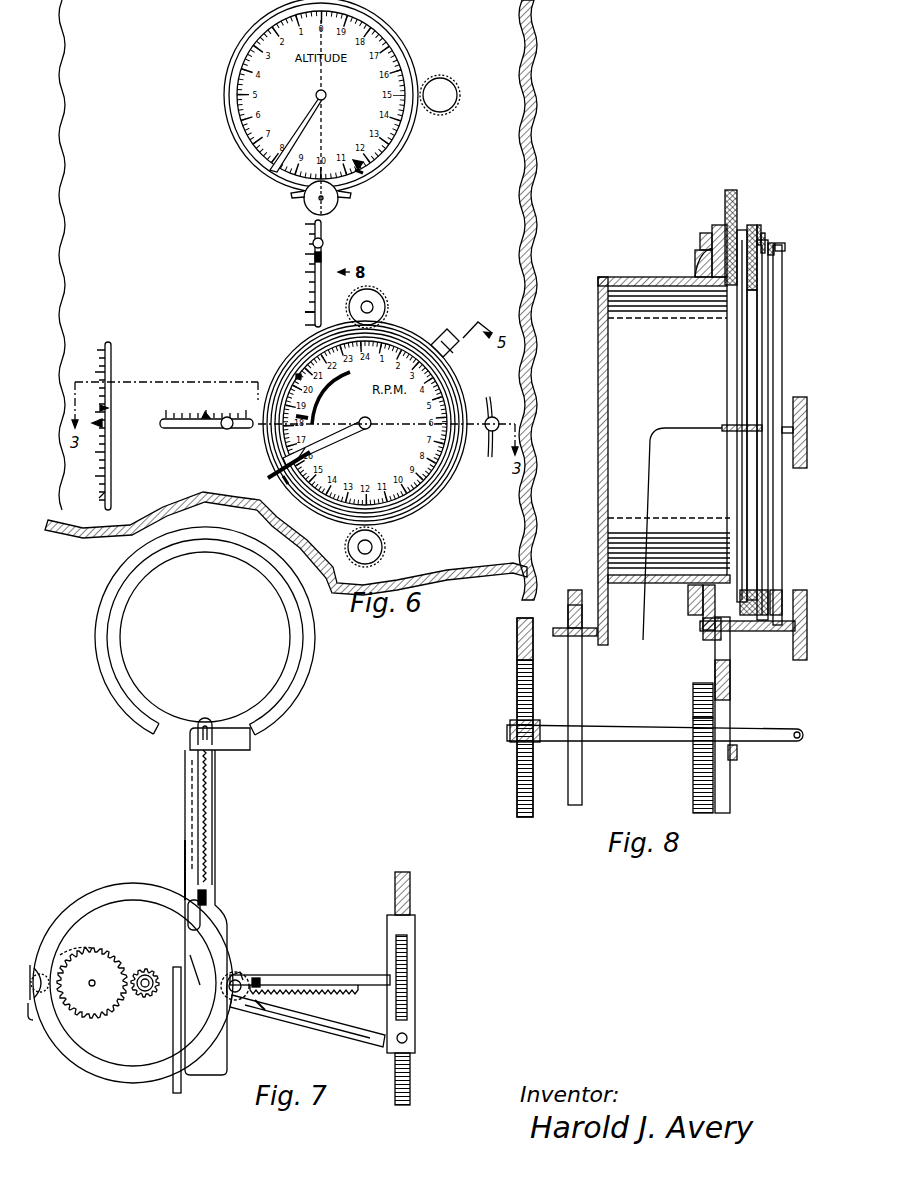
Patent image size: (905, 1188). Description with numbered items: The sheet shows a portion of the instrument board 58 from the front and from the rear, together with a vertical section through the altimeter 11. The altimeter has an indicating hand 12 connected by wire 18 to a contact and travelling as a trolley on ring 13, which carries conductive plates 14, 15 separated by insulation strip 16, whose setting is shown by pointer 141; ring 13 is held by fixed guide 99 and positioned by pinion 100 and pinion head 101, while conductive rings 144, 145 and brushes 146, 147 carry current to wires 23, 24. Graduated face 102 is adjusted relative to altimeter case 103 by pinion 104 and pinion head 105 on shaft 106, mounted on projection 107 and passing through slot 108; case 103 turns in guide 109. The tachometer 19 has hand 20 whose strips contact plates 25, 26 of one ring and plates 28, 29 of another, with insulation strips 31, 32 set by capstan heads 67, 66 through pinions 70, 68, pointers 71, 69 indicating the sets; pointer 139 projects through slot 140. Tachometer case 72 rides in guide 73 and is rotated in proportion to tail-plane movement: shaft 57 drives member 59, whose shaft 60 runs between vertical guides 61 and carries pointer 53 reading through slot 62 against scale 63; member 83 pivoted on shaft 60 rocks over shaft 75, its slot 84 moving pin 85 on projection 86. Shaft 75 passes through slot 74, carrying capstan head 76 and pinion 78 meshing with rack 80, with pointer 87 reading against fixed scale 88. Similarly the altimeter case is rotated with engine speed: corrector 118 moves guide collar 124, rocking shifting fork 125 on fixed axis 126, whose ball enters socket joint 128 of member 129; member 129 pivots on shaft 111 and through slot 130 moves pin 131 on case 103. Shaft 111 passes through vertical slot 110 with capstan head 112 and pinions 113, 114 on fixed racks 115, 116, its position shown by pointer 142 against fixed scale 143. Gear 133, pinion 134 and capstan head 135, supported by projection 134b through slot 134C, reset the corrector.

In FIG. 6, the altimeter 11 is at (243, 48).
In FIG. 8, the altimeter 11 is at (782, 513).
In FIG. 6, the indicating hand 12 is at (312, 120).
In FIG. 8, the indicating hand 12 is at (770, 331).
In FIG. 8, the ring 13 is at (698, 265).
In FIG. 6, the conductive arc-shaped plate 14 is at (395, 137).
In FIG. 6, the conductive arc-shaped plate 15 is at (258, 152).
In FIG. 8, the conductive arc-shaped plate 15 is at (778, 590).
In FIG. 6, the insulation strip 16 is at (362, 175).
In FIG. 8, the wire 18 is at (643, 615).
In FIG. 6, the tachometer 19 is at (428, 510).
In FIG. 6, the indicating hand 20 is at (332, 445).
In FIG. 8, the wire 23 is at (764, 233).
In FIG. 8, the wire 24 is at (759, 225).
In FIG. 6, the plate 25 is at (302, 345).
In FIG. 6, the plate 26 is at (443, 484).
In FIG. 6, the plate 28 is at (405, 345).
In FIG. 6, the plate 29 is at (452, 464).
In FIG. 6, the insulation strip 31 is at (288, 368).
In FIG. 6, the insulation strip 32 is at (290, 472).
In FIG. 6, the pointer 53 is at (110, 410).
In FIG. 7, the shaft 57 is at (395, 885).
In FIG. 6, the instrument board 58 is at (530, 162).
In FIG. 8, the instrument board 58 is at (738, 195).
In FIG. 7, the member 59 is at (392, 1056).
In FIG. 7, the shaft 60 is at (408, 1038).
In FIG. 7, the vertical guides 61 is at (388, 956).
In FIG. 6, the slot 62 is at (111, 488).
In FIG. 6, the scale 63 is at (100, 490).
In FIG. 6, the capstan head 66 is at (375, 308).
In FIG. 6, the capstan head 67 is at (373, 547).
In FIG. 6, the pinion 68 is at (380, 290).
In FIG. 6, the pointer 69 is at (290, 490).
In FIG. 6, the pinion 70 is at (382, 557).
In FIG. 6, the pointer 71 is at (300, 385).
In FIG. 7, the tachometer case 72 is at (122, 1053).
In FIG. 7, the guide 73 is at (118, 895).
In FIG. 6, the slot 74 is at (185, 429).
In FIG. 7, the shaft 75 is at (255, 1000).
In FIG. 6, the capstan head 76 is at (226, 430).
In FIG. 7, the pinion 78 is at (262, 985).
In FIG. 7, the rack 80 is at (355, 975).
In FIG. 7, the member 83 is at (338, 1028).
In FIG. 7, the longitudinal slot 84 is at (310, 1015).
In FIG. 7, the pin 85 is at (240, 985).
In FIG. 7, the projection 86 is at (240, 990).
In FIG. 6, the pointer 87 is at (210, 429).
In FIG. 6, the fixed scale 88 is at (160, 421).
In FIG. 8, the fixed guide 99 is at (770, 600).
In FIG. 6, the pinion 100 is at (458, 93).
In FIG. 6, the pinion head 101 is at (438, 75).
In FIG. 8, the pinion head 101 is at (801, 415).
In FIG. 8, the graduated face 102 is at (736, 378).
In FIG. 7, the altimeter case 103 is at (272, 646).
In FIG. 8, the altimeter case 103 is at (607, 435).
In FIG. 8, the pinion 104 is at (730, 652).
In FIG. 6, the pinion head 105 is at (338, 203).
In FIG. 8, the pinion head 105 is at (806, 645).
In FIG. 6, the shaft 106 is at (305, 200).
In FIG. 8, the shaft 106 is at (752, 633).
In FIG. 8, the projection 107 is at (703, 626).
In FIG. 6, the slot 108 is at (350, 193).
In FIG. 8, the slot 108 is at (705, 637).
In FIG. 7, the guide 109 is at (296, 674).
In FIG. 8, the guide 109 is at (702, 238).
In FIG. 6, the vertical slot 110 is at (322, 275).
In FIG. 8, the vertical slot 110 is at (730, 790).
In FIG. 7, the shaft 111 is at (210, 865).
In FIG. 8, the shaft 111 is at (755, 729).
In FIG. 6, the capstan head 112 is at (313, 243).
In FIG. 8, the capstan head 112 is at (800, 731).
In FIG. 8, the pinion 113 is at (693, 722).
In FIG. 7, the pinion 114 is at (186, 860).
In FIG. 8, the pinion 114 is at (535, 726).
In FIG. 8, the fixed vertical rack 115 is at (693, 775).
In FIG. 7, the fixed vertical rack 116 is at (212, 765).
In FIG. 8, the fixed vertical rack 116 is at (533, 772).
In FIG. 7, the altimeter-corrector 118 is at (122, 1005).
In FIG. 7, the guide collar 124 is at (145, 968).
In FIG. 7, the shifting fork 125 is at (146, 992).
In FIG. 7, the fixed axis 126 is at (179, 1000).
In FIG. 7, the socket joint 128 is at (238, 975).
In FIG. 7, the member 129 is at (188, 952).
In FIG. 8, the member 129 is at (578, 676).
In FIG. 7, the slot 130 is at (186, 913).
In FIG. 7, the pin 131 is at (190, 740).
In FIG. 8, the pin 131 is at (562, 628).
In FIG. 7, the gear 133 is at (95, 948).
In FIG. 7, the pinion 134 is at (35, 965).
In FIG. 7, the projection 134b is at (33, 1020).
In FIG. 6, the slot 134C is at (491, 397).
In FIG. 6, the capstan head 135 is at (495, 424).
In FIG. 6, the pointer 139 is at (309, 418).
In FIG. 6, the slot 140 is at (307, 400).
In FIG. 6, the pointer 141 is at (355, 162).
In FIG. 8, the pointer 141 is at (758, 286).
In FIG. 6, the pointer 142 is at (313, 258).
In FIG. 8, the pointer 142 is at (738, 753).
In FIG. 6, the fixed scale 143 is at (310, 288).
In FIG. 8, the conductive ring 144 is at (786, 247).
In FIG. 8, the conductive ring 145 is at (697, 250).
In FIG. 8, the brush 146 is at (771, 243).
In FIG. 8, the brush 147 is at (720, 228).